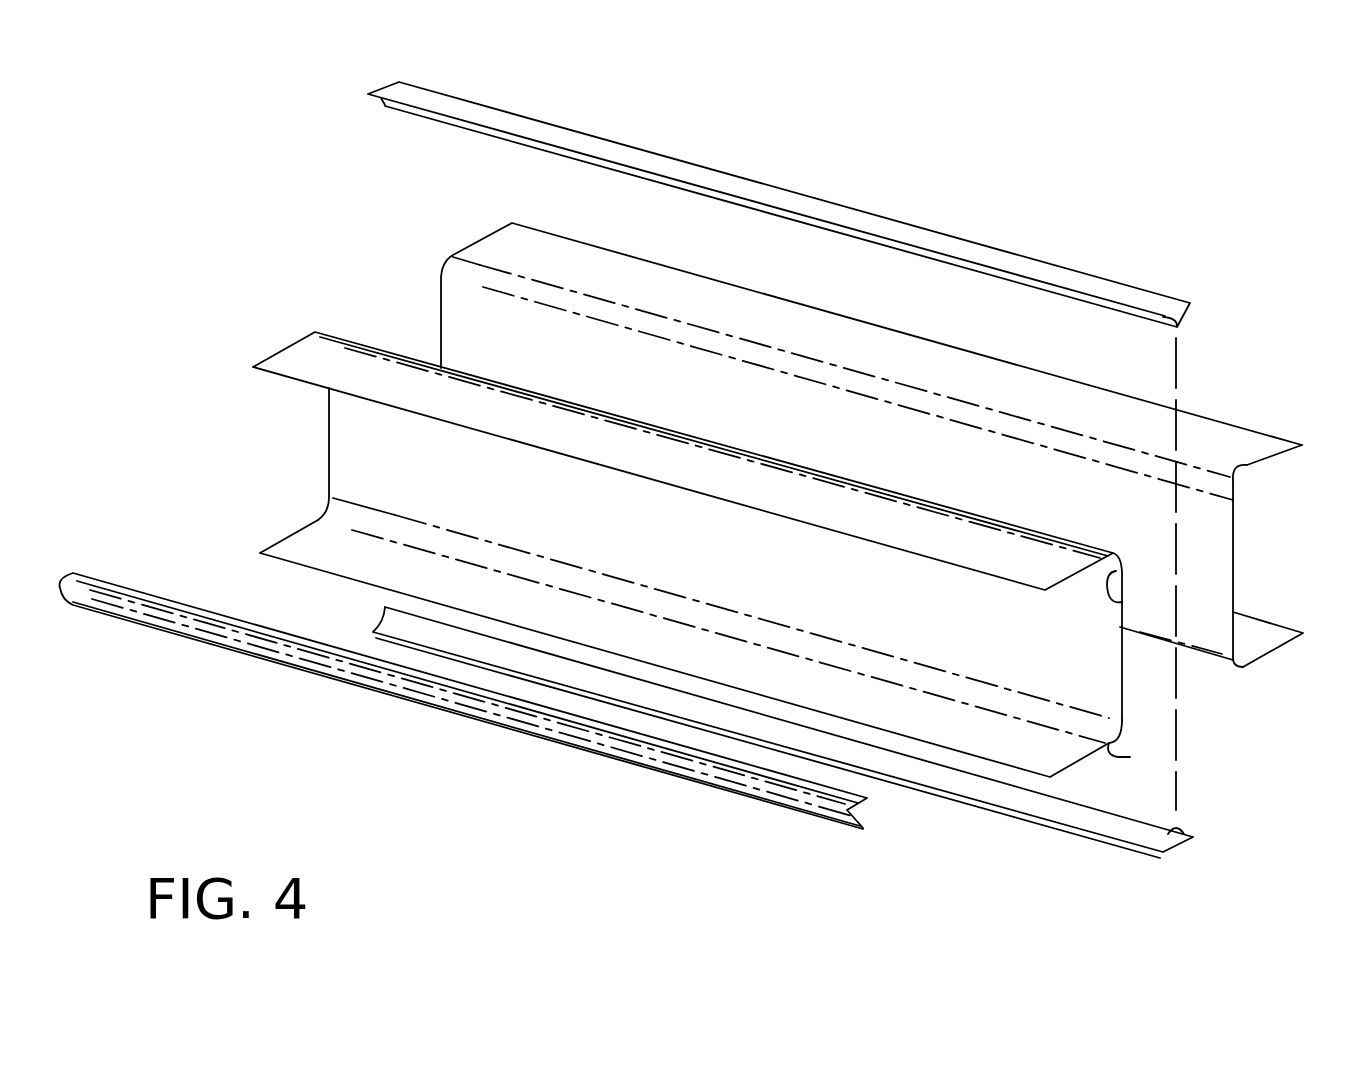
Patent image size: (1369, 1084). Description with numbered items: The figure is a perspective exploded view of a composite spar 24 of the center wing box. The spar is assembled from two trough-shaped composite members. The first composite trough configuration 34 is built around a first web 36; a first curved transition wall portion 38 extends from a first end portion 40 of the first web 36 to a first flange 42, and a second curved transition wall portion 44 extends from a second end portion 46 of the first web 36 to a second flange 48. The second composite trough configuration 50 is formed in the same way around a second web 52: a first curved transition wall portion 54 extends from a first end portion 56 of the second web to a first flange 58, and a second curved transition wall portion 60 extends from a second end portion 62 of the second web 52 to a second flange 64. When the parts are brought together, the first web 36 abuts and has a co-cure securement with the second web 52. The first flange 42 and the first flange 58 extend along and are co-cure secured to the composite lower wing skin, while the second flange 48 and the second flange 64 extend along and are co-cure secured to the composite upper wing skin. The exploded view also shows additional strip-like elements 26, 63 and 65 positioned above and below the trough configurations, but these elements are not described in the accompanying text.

The composite spar 24 is at (1125, 185).
The cap strip 26 is at (808, 798).
The first composite trough configuration 34 is at (712, 576).
The first web 36 is at (1018, 657).
The first curved transition wall portion 38 is at (1130, 757).
The first end portion 40 is at (1128, 699).
The first flange 42 is at (1045, 752).
The second curved transition wall portion 44 is at (1124, 603).
The second end portion 46 is at (1140, 568).
The second flange 48 is at (784, 598).
The second composite trough configuration 50 is at (897, 462).
The second web 52 is at (1035, 468).
The first curved transition wall portion 54 is at (1220, 654).
The first end portion 56 is at (1205, 640).
The first flange 58 is at (1260, 630).
The second curved transition wall portion 60 is at (1247, 463).
The second end portion 62 is at (1212, 522).
The lower strip 63 is at (1173, 822).
The second flange 64 is at (1028, 378).
The upper strip 65 is at (836, 213).